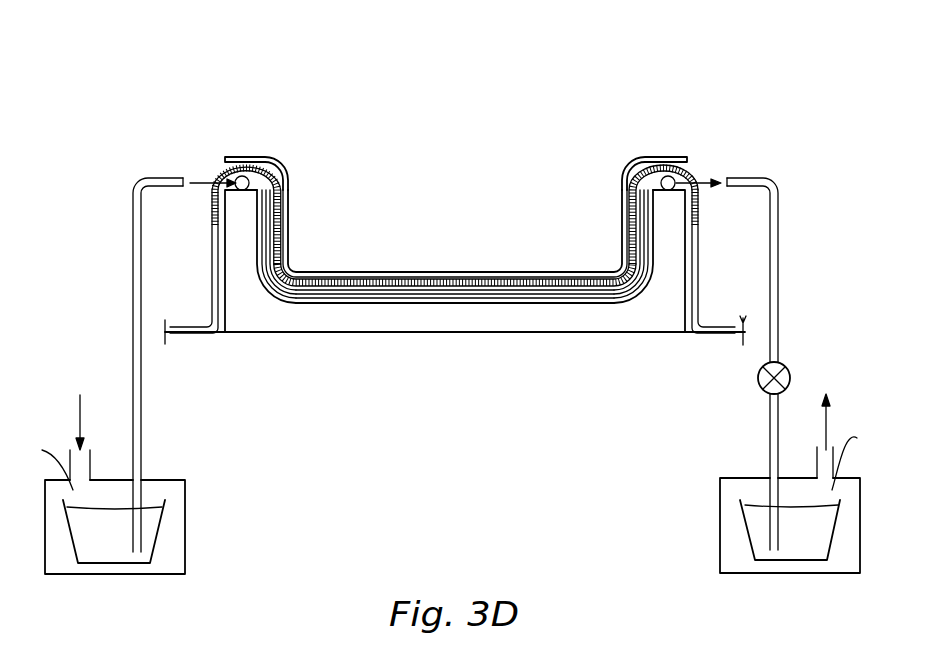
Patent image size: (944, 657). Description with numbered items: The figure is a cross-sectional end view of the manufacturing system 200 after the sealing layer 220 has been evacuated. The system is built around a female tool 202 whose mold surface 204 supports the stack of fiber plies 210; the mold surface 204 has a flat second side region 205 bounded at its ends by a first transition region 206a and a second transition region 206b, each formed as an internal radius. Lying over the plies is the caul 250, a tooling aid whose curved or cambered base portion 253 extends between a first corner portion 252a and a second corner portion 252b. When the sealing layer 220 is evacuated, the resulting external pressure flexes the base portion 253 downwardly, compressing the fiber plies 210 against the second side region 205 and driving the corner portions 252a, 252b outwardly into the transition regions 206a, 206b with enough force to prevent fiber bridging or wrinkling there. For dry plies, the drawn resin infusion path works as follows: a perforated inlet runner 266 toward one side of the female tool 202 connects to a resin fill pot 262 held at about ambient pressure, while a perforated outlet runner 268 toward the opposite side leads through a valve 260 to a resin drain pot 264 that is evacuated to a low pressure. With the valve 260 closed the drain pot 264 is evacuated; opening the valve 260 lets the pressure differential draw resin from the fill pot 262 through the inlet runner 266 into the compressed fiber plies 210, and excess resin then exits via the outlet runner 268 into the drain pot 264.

The manufacturing system 200 is at (140, 75).
The female tool 202 is at (476, 336).
The mold surface 204 is at (488, 300).
The second side region 205 is at (433, 305).
The first transition region 206a is at (627, 265).
The second transition region 206b is at (280, 265).
The fiber plies 210 is at (403, 300).
The sealing layer 220 is at (737, 328).
The caul 250 is at (643, 158).
The first corner portion 252a is at (640, 306).
The second corner portion 252b is at (277, 306).
The base portion 253 is at (533, 305).
The valve 260 is at (790, 366).
The resin fill pot 262 is at (158, 540).
The resin drain pot 264 is at (743, 533).
The perforated inlet runner 266 is at (225, 167).
The perforated outlet runner 268 is at (690, 168).